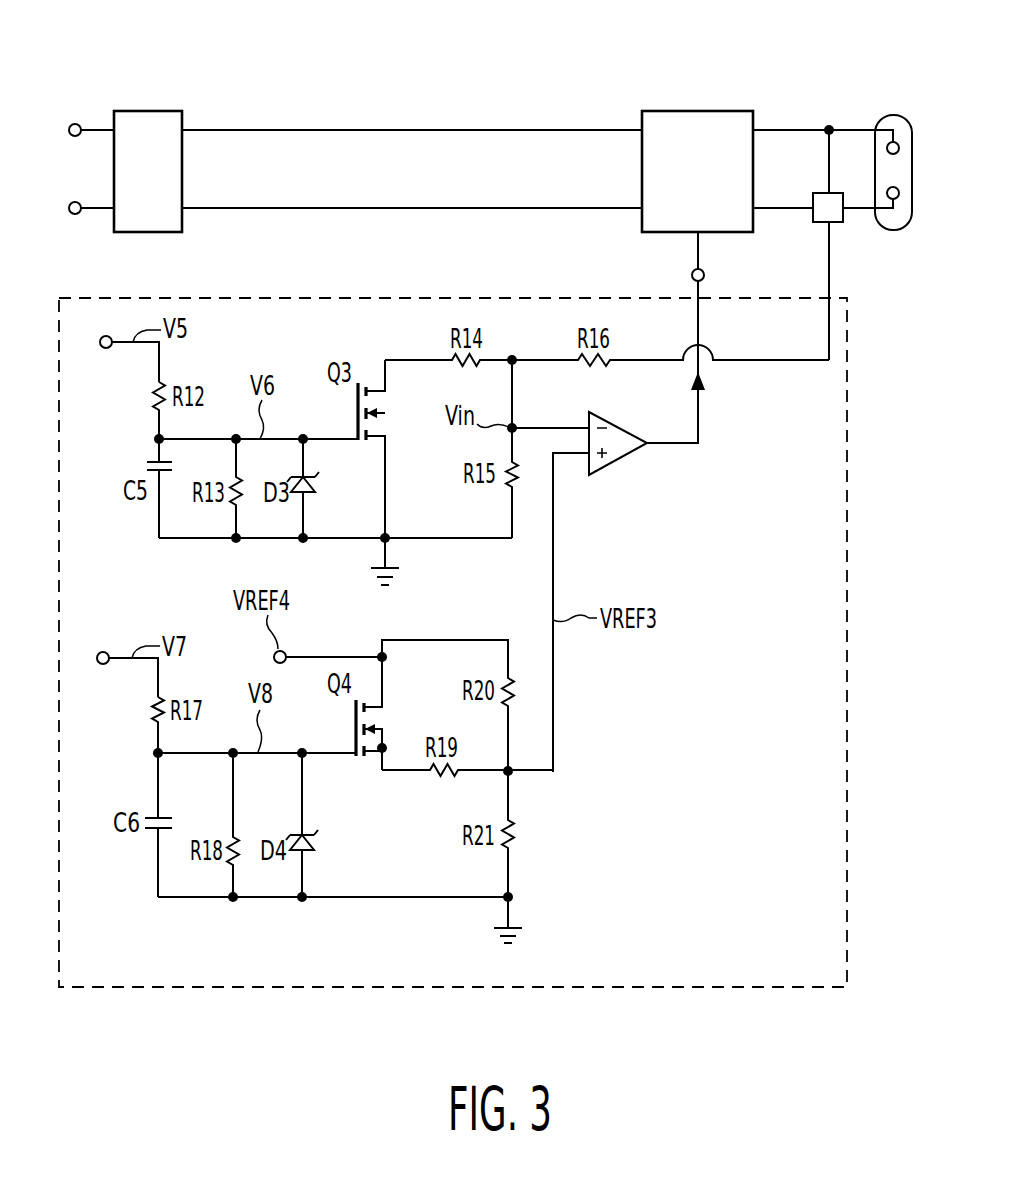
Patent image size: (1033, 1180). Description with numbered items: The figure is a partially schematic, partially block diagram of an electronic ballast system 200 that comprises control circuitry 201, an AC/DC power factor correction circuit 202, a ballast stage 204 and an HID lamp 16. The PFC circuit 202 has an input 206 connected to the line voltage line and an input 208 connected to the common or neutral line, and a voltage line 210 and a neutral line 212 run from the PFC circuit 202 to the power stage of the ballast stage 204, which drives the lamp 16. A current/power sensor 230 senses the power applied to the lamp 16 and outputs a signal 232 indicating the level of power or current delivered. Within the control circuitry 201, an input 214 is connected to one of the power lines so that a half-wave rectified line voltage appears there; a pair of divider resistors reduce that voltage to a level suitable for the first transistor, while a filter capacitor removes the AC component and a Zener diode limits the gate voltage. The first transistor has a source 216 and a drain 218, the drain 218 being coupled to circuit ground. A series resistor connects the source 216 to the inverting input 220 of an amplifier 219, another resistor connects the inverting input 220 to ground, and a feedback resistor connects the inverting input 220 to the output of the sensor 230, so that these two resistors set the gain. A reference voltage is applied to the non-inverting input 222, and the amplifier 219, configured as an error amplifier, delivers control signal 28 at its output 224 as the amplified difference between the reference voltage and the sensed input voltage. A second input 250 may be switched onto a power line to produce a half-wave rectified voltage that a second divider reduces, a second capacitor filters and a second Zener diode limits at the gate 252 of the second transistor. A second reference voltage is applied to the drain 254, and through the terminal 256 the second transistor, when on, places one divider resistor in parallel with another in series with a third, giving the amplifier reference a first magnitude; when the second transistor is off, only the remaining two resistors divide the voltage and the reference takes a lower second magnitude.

The electronic ballast system 200 is at (418, 40).
The AC/DC power factor correction (PFC) circuit 202 is at (146, 111).
The ballast stage 204 is at (697, 111).
The input 206 is at (75, 124).
The input 208 is at (75, 214).
The voltage line 210 is at (226, 130).
The neutral line 212 is at (209, 216).
The HID lamp 16 is at (899, 115).
The current/power sensor 230 is at (811, 223).
The signal 232 is at (831, 260).
The control circuitry 201 is at (778, 990).
The input 214 is at (106, 349).
The source 216 is at (374, 382).
The drain 218 is at (374, 440).
The amplifier 219 is at (618, 458).
The inverting input 220 is at (545, 427).
The non-inverting input 222 is at (576, 458).
The output 224 is at (646, 440).
The control signal 28 is at (700, 412).
The input 250 is at (103, 665).
The gate 252 is at (318, 753).
The drain 254 is at (344, 657).
The drain 256 is at (380, 760).